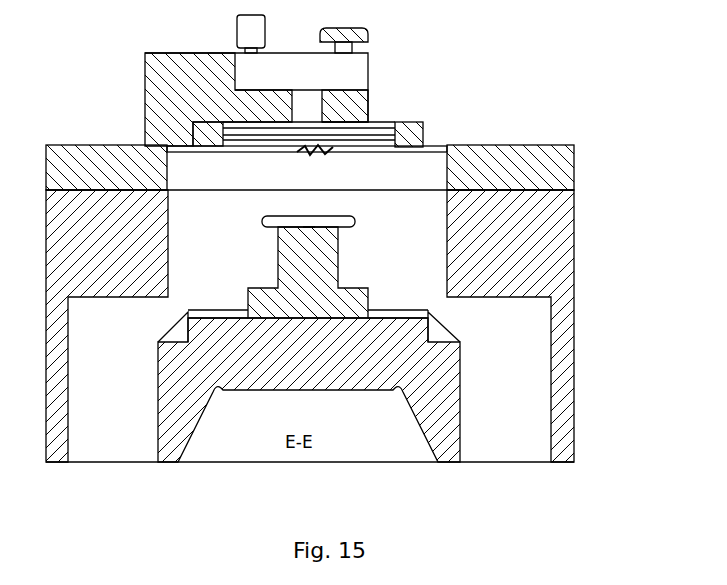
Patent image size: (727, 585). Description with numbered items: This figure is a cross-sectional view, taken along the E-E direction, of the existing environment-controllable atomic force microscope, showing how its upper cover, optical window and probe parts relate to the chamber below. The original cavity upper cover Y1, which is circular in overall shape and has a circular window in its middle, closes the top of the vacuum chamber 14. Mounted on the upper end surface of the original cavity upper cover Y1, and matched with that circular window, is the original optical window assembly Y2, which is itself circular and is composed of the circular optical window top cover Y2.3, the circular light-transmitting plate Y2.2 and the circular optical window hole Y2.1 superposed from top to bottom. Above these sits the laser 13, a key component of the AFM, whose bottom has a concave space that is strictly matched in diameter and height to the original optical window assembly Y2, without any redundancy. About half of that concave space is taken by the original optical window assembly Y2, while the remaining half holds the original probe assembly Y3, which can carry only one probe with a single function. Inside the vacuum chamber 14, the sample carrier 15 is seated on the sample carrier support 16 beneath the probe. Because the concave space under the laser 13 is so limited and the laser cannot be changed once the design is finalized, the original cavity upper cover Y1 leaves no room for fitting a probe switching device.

The laser 13 is at (313, 83).
The vacuum chamber 14 is at (563, 318).
The sample carrier 15 is at (310, 278).
The sample carrier support 16 is at (432, 348).
The original cavity upper cover Y1 is at (113, 155).
The original optical window assembly Y2 is at (403, 92).
The circular optical window hole Y2.1 is at (424, 134).
The circular light-transmitting plate Y2.2 is at (425, 125).
The circular optical window top cover Y2.3 is at (383, 125).
The original probe assembly Y3 is at (285, 140).